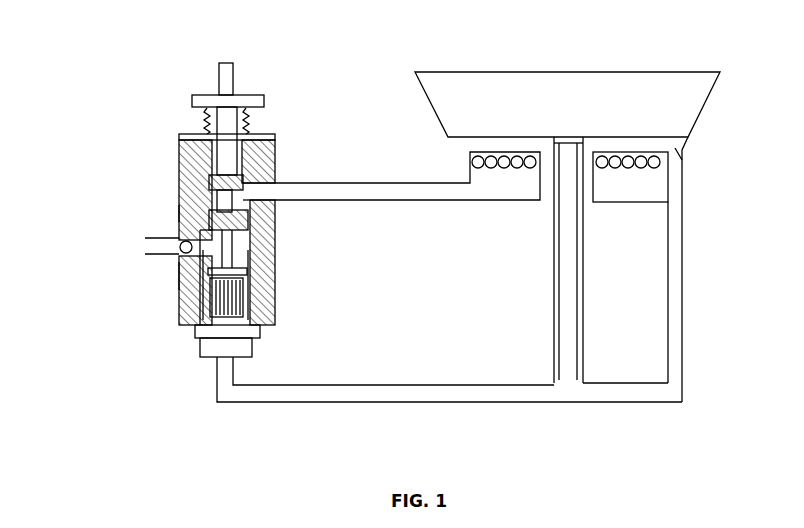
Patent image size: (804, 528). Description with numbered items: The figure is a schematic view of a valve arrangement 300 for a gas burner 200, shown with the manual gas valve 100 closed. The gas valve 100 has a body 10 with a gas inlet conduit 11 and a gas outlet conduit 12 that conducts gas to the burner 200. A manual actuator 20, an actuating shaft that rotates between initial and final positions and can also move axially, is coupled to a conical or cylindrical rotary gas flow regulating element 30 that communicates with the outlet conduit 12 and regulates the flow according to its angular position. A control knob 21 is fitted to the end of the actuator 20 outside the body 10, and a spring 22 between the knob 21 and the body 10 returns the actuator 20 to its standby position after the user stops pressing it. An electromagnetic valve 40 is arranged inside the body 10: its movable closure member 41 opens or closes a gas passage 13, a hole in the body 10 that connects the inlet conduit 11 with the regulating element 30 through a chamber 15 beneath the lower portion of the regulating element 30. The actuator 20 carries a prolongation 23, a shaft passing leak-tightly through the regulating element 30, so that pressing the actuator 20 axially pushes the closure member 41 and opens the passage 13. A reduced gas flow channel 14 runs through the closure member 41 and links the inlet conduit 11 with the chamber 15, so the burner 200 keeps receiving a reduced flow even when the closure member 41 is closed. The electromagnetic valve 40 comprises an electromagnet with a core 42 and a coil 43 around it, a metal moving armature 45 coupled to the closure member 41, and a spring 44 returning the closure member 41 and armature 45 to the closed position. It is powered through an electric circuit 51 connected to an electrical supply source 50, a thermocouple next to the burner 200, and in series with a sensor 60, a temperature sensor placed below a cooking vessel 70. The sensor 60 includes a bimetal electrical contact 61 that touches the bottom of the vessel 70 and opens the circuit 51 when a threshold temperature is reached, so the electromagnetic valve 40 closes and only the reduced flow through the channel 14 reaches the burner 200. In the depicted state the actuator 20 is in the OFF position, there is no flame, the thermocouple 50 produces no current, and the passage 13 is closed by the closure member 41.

The manual gas valve 100 is at (118, 90).
The body 10 is at (178, 163).
The gas inlet conduit 11 is at (160, 250).
The gas outlet conduit 12 is at (258, 192).
The gas passage 13 is at (276, 237).
The reduced gas flow channel 14 is at (177, 230).
The chamber 15 is at (177, 213).
The manual actuator 20 is at (227, 120).
The control knob 21 is at (223, 68).
The spring 22 is at (193, 95).
The prolongation 23 is at (273, 218).
The rotary gas flow regulating element 30 is at (210, 200).
The electromagnetic valve 40 is at (200, 302).
The movable closure member 41 is at (275, 268).
The core 42 is at (230, 325).
The coil 43 is at (203, 320).
The spring 44 is at (185, 268).
The metal moving armature 45 is at (266, 328).
The electrical supply source 50 is at (687, 167).
The electric circuit 51 is at (507, 382).
The sensor 60 is at (572, 134).
The electrical contact 61 is at (558, 137).
The cooking vessel 70 is at (668, 106).
The gas burner 200 is at (627, 177).
The valve arrangement 300 is at (368, 97).